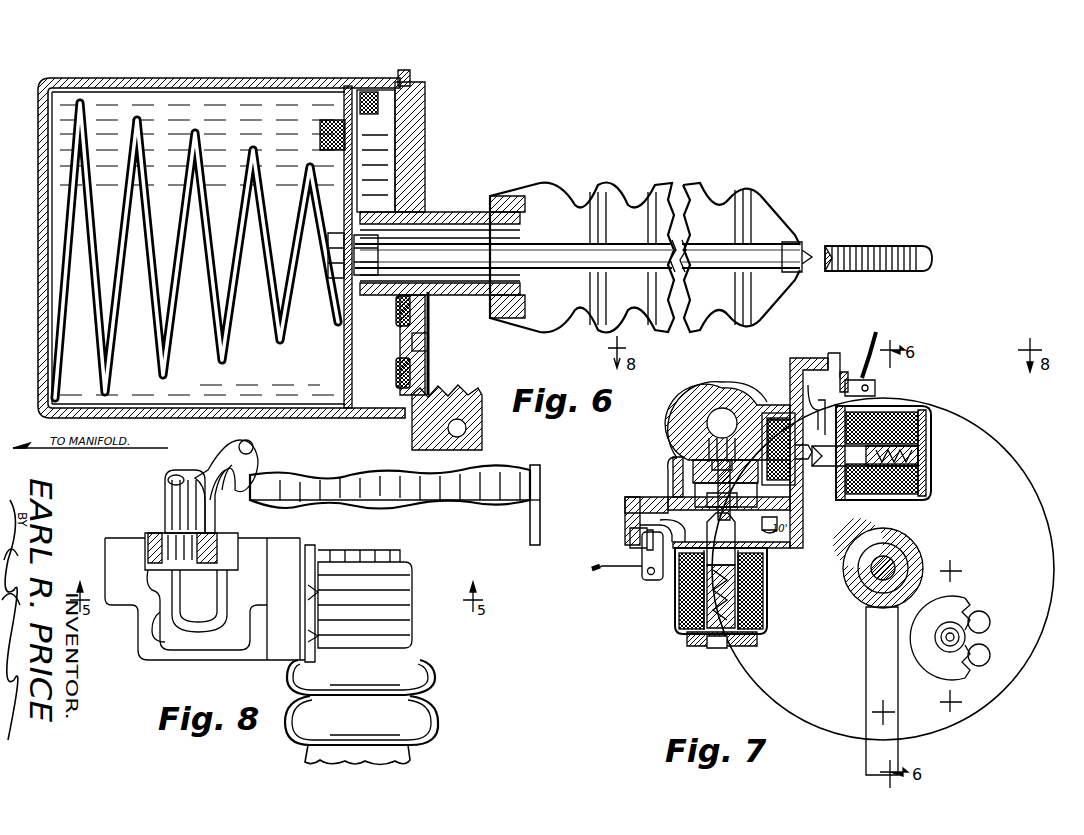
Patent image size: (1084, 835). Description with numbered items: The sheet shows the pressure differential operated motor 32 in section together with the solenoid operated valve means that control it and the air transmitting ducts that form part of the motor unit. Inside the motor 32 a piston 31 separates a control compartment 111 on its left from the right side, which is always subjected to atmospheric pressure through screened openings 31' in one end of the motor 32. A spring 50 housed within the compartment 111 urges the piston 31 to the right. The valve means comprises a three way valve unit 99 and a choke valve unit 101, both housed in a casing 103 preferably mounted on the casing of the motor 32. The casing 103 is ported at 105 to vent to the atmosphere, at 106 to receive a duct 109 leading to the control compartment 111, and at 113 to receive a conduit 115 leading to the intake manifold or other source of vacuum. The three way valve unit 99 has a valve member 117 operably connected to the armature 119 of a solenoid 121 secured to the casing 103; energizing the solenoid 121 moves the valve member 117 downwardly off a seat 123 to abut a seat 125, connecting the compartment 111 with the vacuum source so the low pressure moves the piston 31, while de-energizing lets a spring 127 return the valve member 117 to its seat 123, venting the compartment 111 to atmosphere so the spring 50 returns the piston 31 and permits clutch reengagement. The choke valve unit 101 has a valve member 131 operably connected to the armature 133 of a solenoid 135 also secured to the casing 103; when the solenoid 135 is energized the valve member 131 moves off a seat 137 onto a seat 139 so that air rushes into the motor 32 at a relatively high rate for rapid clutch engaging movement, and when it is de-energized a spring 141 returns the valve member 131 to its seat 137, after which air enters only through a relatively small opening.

In FIG. 6, the motor 32 is at (265, 72).
In FIG. 7, the motor 32 is at (990, 425).
In FIG. 8, the motor 32 is at (490, 547).
In FIG. 6, the control compartment 111 is at (148, 95).
In FIG. 6, the spring 50 is at (230, 350).
In FIG. 6, the motor piston 31 is at (420, 239).
In FIG. 6, the screened openings 31' is at (445, 371).
In FIG. 7, the screened openings 31' is at (974, 636).
In FIG. 7, the three way valve unit 99 is at (668, 462).
In FIG. 7, the choke valve unit 101 is at (940, 425).
In FIG. 7, the casing 103 is at (808, 358).
In FIG. 8, the casing 103 is at (250, 662).
In FIG. 7, the port 105 is at (812, 525).
In FIG. 8, the port 106 is at (158, 552).
In FIG. 8, the duct 109 is at (170, 510).
In FIG. 7, the port 113 is at (722, 408).
In FIG. 8, the conduit 115 is at (258, 452).
In FIG. 7, the valve member 117 is at (683, 455).
In FIG. 7, the armature 119 is at (672, 590).
In FIG. 7, the solenoid 121 is at (672, 630).
In FIG. 7, the seat 123 is at (700, 415).
In FIG. 7, the seat 125 is at (695, 484).
In FIG. 7, the spring 127 is at (712, 648).
In FIG. 7, the valve member 131 is at (782, 418).
In FIG. 7, the armature 133 is at (880, 406).
In FIG. 7, the solenoid 135 is at (912, 505).
In FIG. 8, the solenoid 135 is at (410, 595).
In FIG. 7, the seat 137 is at (731, 405).
In FIG. 7, the seat 139 is at (832, 495).
In FIG. 7, the spring 141 is at (925, 470).